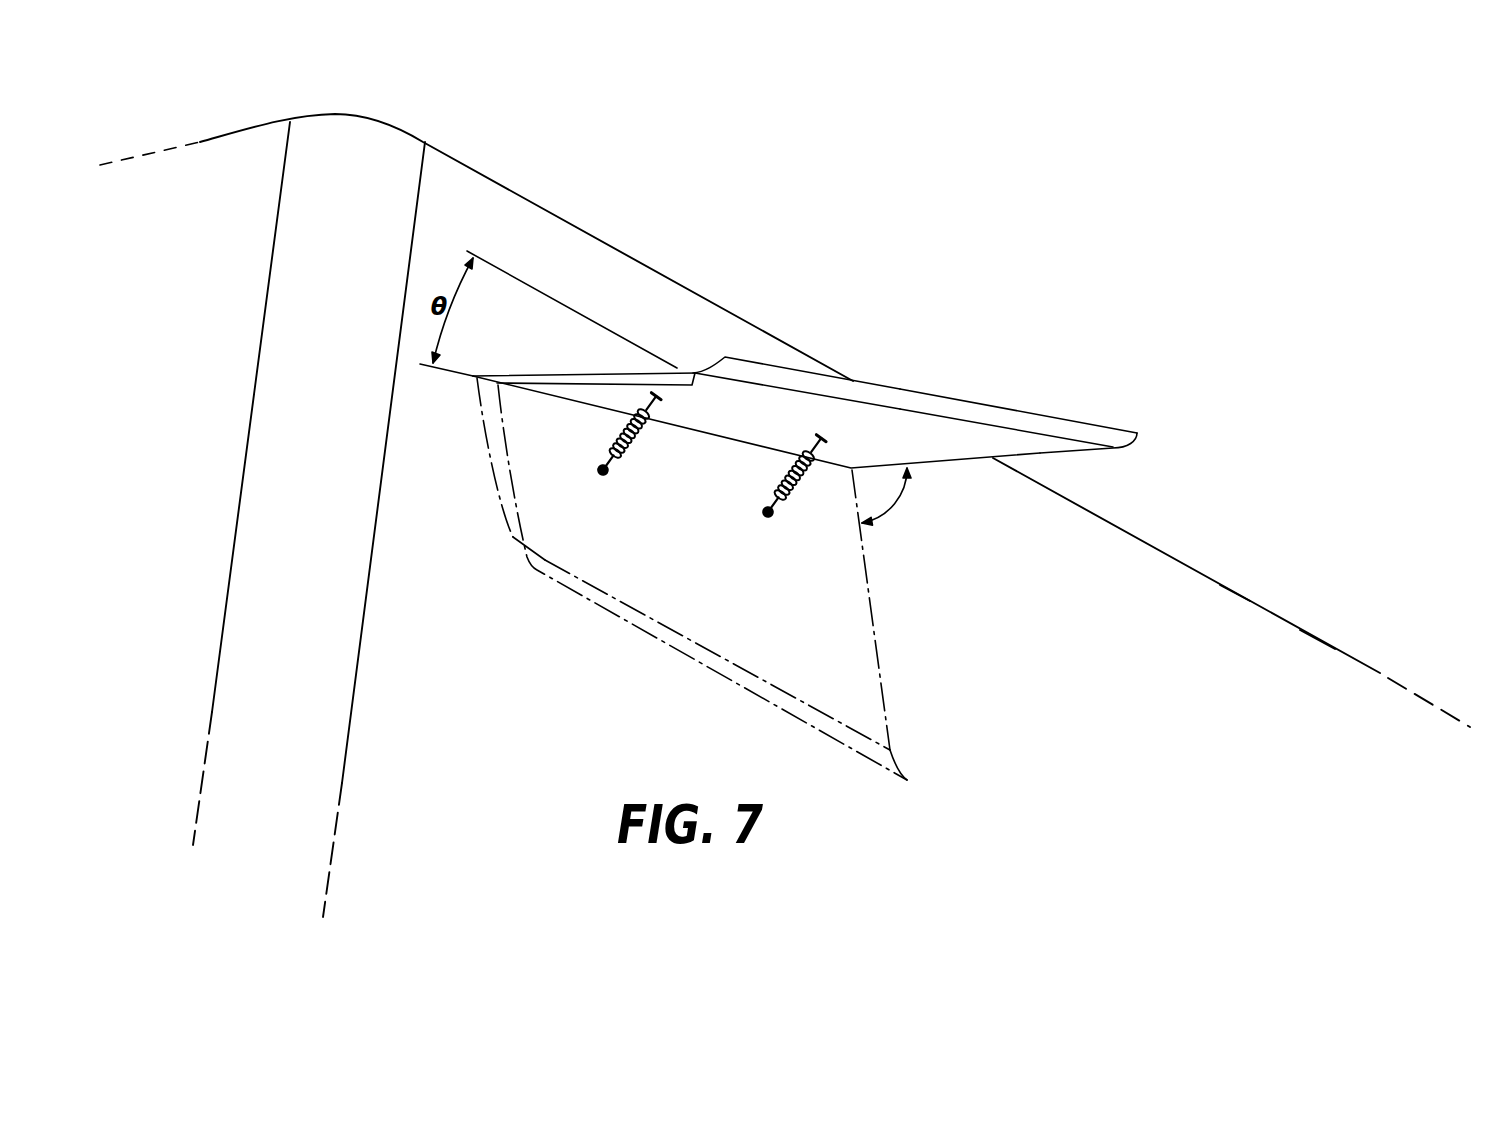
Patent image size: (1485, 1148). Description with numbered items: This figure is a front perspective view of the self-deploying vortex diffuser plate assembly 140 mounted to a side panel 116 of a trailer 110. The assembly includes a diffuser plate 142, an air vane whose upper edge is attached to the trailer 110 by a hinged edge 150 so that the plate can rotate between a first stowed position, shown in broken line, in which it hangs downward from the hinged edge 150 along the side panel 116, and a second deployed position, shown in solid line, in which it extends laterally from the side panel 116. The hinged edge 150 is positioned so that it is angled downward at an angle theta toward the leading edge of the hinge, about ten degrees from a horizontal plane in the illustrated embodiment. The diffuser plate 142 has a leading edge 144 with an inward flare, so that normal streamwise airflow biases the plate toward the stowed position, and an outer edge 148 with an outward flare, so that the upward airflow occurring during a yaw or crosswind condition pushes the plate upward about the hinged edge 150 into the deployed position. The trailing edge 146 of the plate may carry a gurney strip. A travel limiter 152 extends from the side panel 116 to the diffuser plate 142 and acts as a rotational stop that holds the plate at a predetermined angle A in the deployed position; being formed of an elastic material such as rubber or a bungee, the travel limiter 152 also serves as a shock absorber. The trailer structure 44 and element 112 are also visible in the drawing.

The vehicle roof 44 is at (243, 167).
The trailer 110 is at (1172, 538).
The roof rail 112 is at (1235, 593).
The side panel 116 is at (1297, 660).
The vortex diffuser plate assembly 140 is at (808, 546).
The diffuser plate 142 is at (964, 433).
The leading edge 144 is at (604, 374).
The trailing edge 146 is at (1057, 453).
The outer edge 148 is at (826, 400).
The hinged edge 150 is at (718, 438).
The travel limiter 152 is at (627, 457).